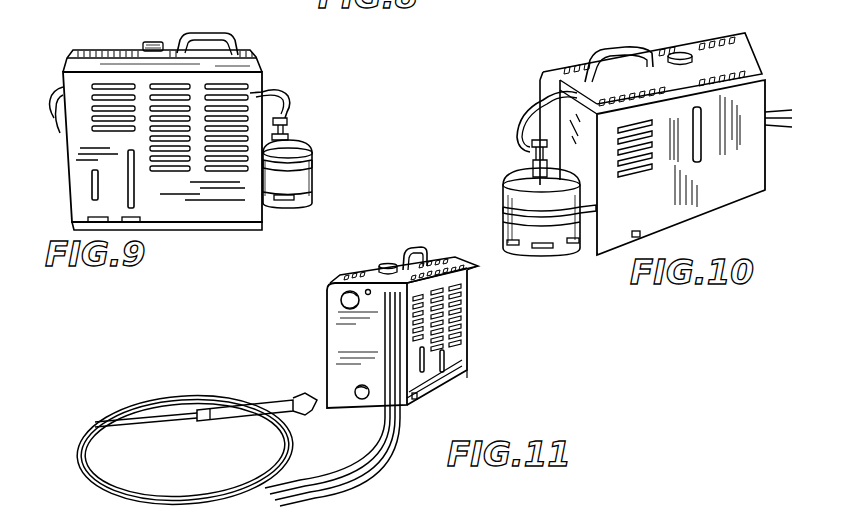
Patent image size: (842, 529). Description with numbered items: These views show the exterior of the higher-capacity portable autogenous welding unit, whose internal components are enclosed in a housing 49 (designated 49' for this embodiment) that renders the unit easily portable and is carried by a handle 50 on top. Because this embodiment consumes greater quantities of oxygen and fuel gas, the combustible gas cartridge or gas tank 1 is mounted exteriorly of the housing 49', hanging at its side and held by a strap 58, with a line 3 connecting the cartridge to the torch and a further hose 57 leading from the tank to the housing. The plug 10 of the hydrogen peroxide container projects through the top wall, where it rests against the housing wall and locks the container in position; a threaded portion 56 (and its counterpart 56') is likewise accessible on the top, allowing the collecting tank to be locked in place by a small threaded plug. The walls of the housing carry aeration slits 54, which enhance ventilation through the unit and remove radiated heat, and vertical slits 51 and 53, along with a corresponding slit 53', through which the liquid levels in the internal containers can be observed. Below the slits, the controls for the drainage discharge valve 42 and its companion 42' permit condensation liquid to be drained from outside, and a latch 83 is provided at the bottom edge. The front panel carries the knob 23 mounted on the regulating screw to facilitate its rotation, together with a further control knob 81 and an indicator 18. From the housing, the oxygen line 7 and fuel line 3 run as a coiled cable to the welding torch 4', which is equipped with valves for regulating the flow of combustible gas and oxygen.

In FIG. 9, the combustible gas cartridge 1 is at (302, 147).
In FIG. 10, the combustible gas cartridge 1 is at (513, 183).
In FIG. 9, the line 3 is at (57, 122).
In FIG. 10, the line 3 is at (786, 100).
In FIG. 11, the line 3 is at (383, 447).
In FIG. 11, the torch 4' is at (206, 390).
In FIG. 9, the line 7 is at (50, 89).
In FIG. 10, the line 7 is at (778, 127).
In FIG. 11, the line 7 is at (410, 420).
In FIG. 9, the plug 10 is at (160, 42).
In FIG. 10, the plug 10 is at (682, 52).
In FIG. 11, the plug 10 is at (387, 263).
In FIG. 11, the indicator lamp 18 is at (366, 289).
In FIG. 11, the knob 23 is at (360, 399).
In FIG. 9, the discharge valve 42 is at (164, 236).
In FIG. 9, the foot 42' is at (71, 217).
In FIG. 9, the housing 49 is at (149, 128).
In FIG. 11, the housing 49 is at (378, 331).
In FIG. 10, the housing 49' is at (662, 163).
In FIG. 9, the handle 50 is at (231, 36).
In FIG. 10, the handle 50 is at (623, 48).
In FIG. 11, the handle 50 is at (430, 250).
In FIG. 10, the vertical slit 51 is at (697, 162).
In FIG. 9, the vertical slit 53 is at (137, 146).
In FIG. 11, the vertical slit 53 is at (465, 328).
In FIG. 11, the vent slot 53' is at (456, 376).
In FIG. 9, the aeration slits 54 is at (268, 90).
In FIG. 10, the aeration slits 54 is at (645, 162).
In FIG. 11, the aeration slits 54 is at (470, 266).
In FIG. 10, the threaded portion 56 is at (652, 60).
In FIG. 9, the cover 56' is at (162, 41).
In FIG. 10, the hose 57 is at (543, 100).
In FIG. 9, the strap 58 is at (313, 165).
In FIG. 10, the strap 58 is at (503, 218).
In FIG. 11, the control knob 81 is at (341, 302).
In FIG. 10, the latch 83 is at (633, 236).